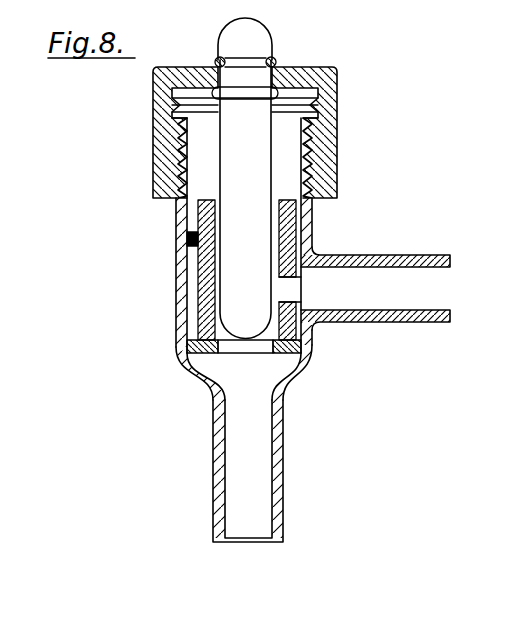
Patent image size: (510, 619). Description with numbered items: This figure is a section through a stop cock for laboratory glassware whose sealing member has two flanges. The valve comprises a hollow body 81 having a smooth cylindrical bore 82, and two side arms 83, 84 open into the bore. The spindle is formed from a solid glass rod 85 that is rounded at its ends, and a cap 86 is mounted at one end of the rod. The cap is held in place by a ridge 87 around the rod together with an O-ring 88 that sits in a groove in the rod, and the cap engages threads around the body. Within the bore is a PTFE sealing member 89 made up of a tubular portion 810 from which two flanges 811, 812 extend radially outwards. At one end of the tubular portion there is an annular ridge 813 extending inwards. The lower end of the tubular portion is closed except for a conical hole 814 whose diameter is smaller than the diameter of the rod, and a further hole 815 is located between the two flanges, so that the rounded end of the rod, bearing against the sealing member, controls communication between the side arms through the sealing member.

The hollow body 81 is at (180, 300).
The smooth cylindrical bore 82 is at (180, 272).
The side arm 83 is at (398, 278).
The side arm 84 is at (238, 486).
The solid glass rod 85 is at (257, 162).
The cap 86 is at (330, 164).
The ridge 87 is at (268, 92).
The O-ring 88 is at (277, 62).
The PTFE sealing member 89 is at (300, 340).
The tubular portion 810 is at (200, 308).
The flange 811 is at (188, 237).
The flange 812 is at (181, 352).
The annular ridge 813 is at (284, 206).
The conical hole 814 is at (253, 347).
The further hole 815 is at (292, 292).